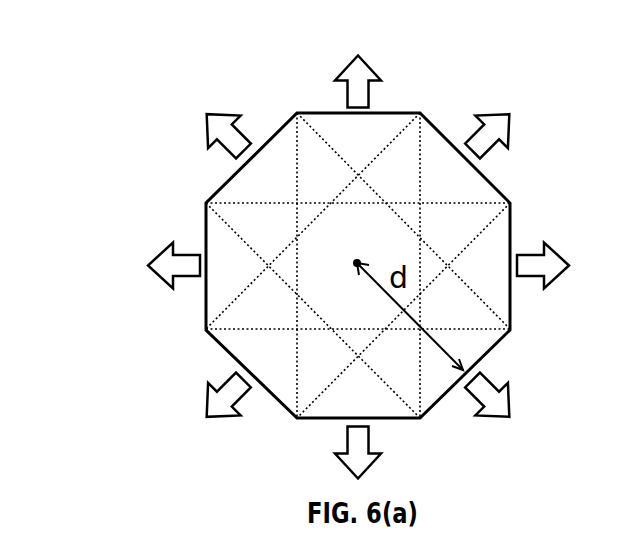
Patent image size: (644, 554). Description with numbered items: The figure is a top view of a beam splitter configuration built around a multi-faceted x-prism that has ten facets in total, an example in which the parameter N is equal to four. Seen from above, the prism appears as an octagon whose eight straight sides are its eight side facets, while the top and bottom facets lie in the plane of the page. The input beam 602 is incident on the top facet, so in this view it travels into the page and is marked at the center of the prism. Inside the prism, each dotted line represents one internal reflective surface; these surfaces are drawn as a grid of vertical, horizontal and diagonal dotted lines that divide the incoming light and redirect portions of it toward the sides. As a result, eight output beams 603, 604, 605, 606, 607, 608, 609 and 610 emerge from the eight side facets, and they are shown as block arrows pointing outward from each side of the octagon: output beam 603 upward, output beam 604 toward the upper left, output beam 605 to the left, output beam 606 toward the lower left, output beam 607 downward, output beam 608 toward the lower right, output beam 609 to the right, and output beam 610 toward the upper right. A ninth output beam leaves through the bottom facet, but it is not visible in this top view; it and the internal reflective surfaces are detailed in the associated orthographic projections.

The input beam 602 is at (357, 263).
The output beam 603 is at (340, 80).
The output beam 604 is at (240, 117).
The output beam 605 is at (168, 250).
The output beam 606 is at (217, 388).
The output beam 607 is at (368, 455).
The output beam 608 is at (510, 397).
The output beam 609 is at (550, 257).
The output beam 610 is at (502, 127).